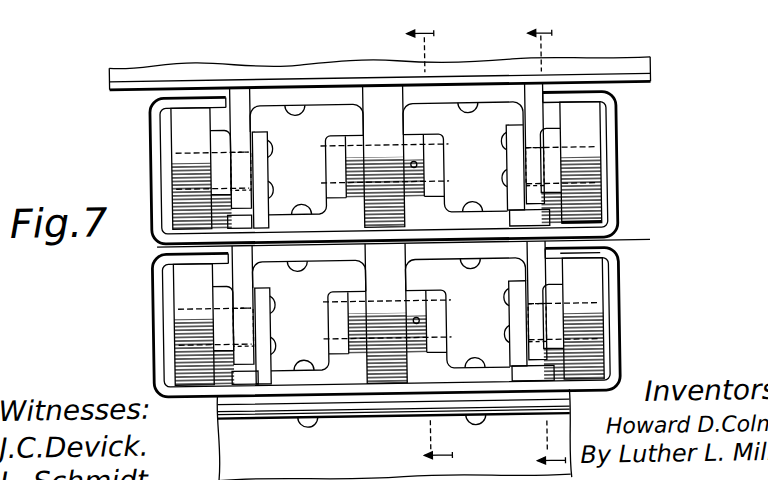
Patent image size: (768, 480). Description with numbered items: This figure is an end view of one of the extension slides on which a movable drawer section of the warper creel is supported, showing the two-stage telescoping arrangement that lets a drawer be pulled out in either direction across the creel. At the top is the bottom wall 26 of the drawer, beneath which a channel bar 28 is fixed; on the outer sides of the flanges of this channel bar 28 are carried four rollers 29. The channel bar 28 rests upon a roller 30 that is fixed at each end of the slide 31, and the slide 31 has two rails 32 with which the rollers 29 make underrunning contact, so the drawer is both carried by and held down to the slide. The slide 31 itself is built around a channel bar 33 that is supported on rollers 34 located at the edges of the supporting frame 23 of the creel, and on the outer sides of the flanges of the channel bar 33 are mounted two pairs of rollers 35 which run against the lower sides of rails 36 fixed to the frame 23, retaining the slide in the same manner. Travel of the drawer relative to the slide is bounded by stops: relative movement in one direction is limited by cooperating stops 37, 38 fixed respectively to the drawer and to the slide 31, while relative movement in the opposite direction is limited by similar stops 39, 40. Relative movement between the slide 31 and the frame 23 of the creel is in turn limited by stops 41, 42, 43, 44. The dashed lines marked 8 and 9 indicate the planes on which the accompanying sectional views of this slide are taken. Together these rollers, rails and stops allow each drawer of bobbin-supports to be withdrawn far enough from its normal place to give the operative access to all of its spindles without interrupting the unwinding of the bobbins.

The section line 8- 8 is at (546, 242).
The section line 9- 9 is at (429, 243).
The supporting frame 23 is at (394, 434).
The bottom wall 26 is at (632, 82).
The channel bar 28 is at (342, 99).
The rollers 29 is at (175, 120).
The roller 30 is at (377, 115).
The slide 31 is at (403, 239).
The rails 32 is at (188, 104).
The channel bar 33 is at (583, 256).
The rollers 34 is at (383, 272).
The rollers 35 is at (192, 285).
The rails 36 is at (592, 250).
The stop 37 is at (508, 199).
The stop 38 is at (592, 208).
The stop 39 is at (257, 208).
The stop 40 is at (238, 221).
The stop 41 is at (263, 365).
The stop 42 is at (248, 378).
The stop 43 is at (517, 355).
The stop 44 is at (543, 371).